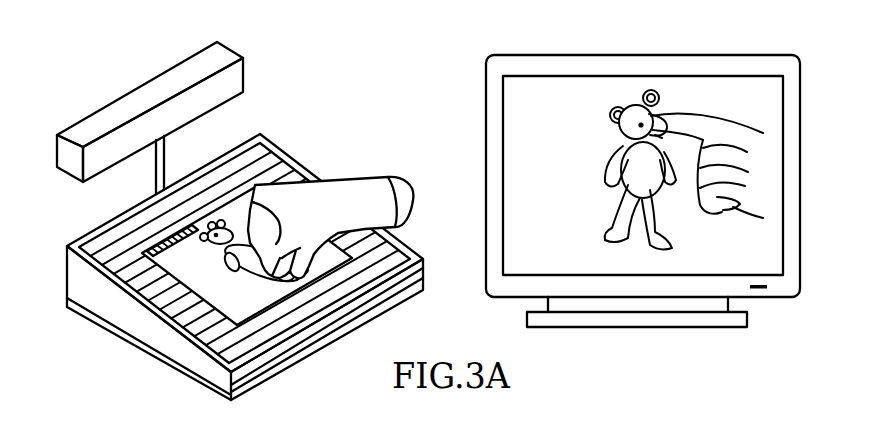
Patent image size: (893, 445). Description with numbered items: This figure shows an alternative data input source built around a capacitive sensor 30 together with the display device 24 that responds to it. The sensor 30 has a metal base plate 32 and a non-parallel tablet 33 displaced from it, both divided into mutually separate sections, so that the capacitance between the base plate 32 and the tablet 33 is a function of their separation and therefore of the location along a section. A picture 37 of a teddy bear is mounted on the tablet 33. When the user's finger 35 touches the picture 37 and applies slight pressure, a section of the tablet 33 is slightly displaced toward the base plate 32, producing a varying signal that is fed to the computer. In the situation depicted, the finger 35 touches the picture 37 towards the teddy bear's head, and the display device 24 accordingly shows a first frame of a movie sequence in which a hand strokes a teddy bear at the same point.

The display device 24 is at (660, 55).
The capacitive sensor 30 is at (218, 238).
The base plate 32 is at (112, 334).
The tablet 33 is at (217, 157).
The finger 35 is at (246, 212).
The picture 37 is at (184, 262).